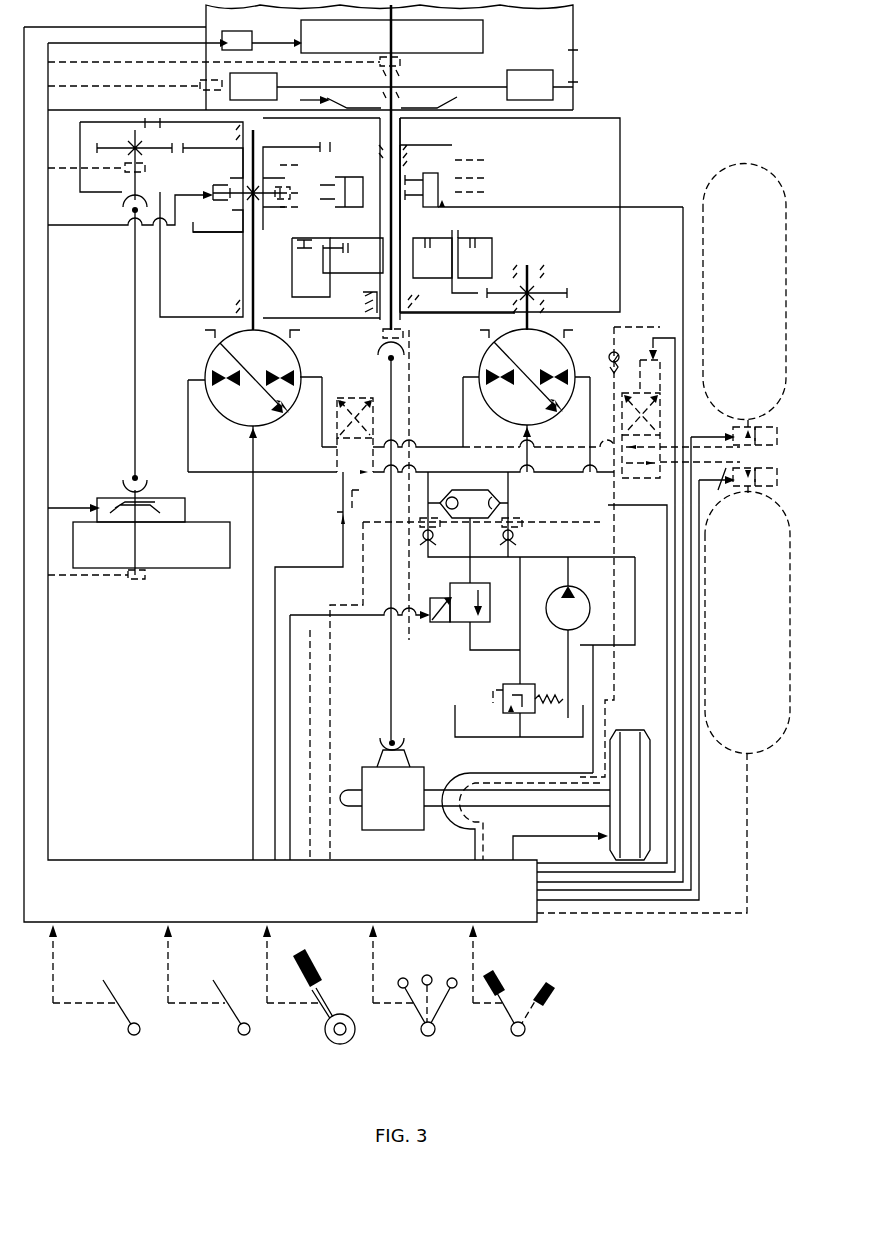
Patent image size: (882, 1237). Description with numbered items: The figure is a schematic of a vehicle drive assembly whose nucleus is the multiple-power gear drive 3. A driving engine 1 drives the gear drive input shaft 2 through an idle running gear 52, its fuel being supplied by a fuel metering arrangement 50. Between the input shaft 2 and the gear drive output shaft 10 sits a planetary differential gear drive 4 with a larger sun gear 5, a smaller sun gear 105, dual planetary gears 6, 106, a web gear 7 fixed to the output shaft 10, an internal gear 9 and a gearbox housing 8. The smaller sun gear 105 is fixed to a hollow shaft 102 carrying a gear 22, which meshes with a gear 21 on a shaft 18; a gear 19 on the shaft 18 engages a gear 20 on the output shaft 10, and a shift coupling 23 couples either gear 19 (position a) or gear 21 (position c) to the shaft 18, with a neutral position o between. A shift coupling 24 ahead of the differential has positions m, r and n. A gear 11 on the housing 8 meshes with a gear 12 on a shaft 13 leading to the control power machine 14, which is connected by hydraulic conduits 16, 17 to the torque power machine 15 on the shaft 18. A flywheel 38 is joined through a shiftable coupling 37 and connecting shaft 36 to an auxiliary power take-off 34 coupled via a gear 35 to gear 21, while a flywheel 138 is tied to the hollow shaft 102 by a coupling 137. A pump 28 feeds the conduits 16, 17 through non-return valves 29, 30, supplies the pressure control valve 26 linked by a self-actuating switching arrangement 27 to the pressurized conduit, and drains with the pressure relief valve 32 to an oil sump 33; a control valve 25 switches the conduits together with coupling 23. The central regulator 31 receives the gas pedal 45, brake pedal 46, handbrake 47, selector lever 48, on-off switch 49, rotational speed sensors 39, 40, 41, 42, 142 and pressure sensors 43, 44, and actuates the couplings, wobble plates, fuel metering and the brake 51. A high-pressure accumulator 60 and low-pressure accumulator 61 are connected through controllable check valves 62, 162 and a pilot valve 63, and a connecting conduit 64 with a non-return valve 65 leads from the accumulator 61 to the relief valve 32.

The driving engine 1 is at (573, 22).
The gear drive input shaft 2 is at (388, 137).
The multiple-power gear drive 3 is at (620, 133).
The planetary differential gear drive 4 is at (423, 272).
The larger sun gear 5 is at (420, 250).
The dual planetary gear 6 is at (466, 252).
The web gear 7 is at (330, 268).
The gearbox housing 8 is at (292, 280).
The internal gear 9 is at (297, 244).
The gear drive output shaft 10 is at (400, 331).
The gear 11 is at (475, 293).
The gear 12 is at (567, 293).
The shaft 13 is at (527, 266).
The control power machine 14 is at (570, 336).
The torque power machine 15 is at (210, 342).
The hydraulic conduit 16 is at (443, 475).
The hydraulic conduit 17 is at (452, 452).
The shaft 18 is at (253, 282).
The gear 19 is at (230, 232).
The gear 20 is at (345, 207).
The gear 21 is at (228, 148).
The gear 22 is at (330, 147).
The shift coupling 23 is at (227, 203).
The shift coupling 24 is at (430, 207).
The control valve 25 is at (336, 484).
The pressure control valve 26 is at (455, 628).
The self-actuating switching arrangement 27 is at (492, 490).
The pump 28 is at (580, 600).
The non-return valve 29 is at (514, 537).
The non-return valve 30 is at (434, 537).
The central regulator 31 is at (247, 918).
The pressure relief valve 32 is at (525, 684).
The oil sump 33 is at (470, 737).
The auxiliary power take-off 34 is at (117, 193).
The gear 35 is at (155, 148).
The connecting shaft 36 is at (133, 345).
The shiftable coupling 37 is at (150, 510).
The flywheel 38 is at (196, 568).
The rotational speed sensor 39 is at (400, 62).
The rotational speed sensor 40 is at (383, 333).
The rotational speed sensor 41 is at (125, 170).
The rotational speed sensor 42 is at (128, 580).
The pressure sensor 43 is at (422, 545).
The pressure sensor 44 is at (522, 522).
The gas pedal 45 is at (120, 1025).
The brake pedal 46 is at (238, 1024).
The handbrake 47 is at (328, 1008).
The selector lever 48 is at (420, 1010).
The on-off switch 49 is at (508, 1010).
The fuel metering arrangement 50 is at (252, 47).
The brake 51 is at (540, 836).
The idle running gear 52 is at (483, 33).
The high-pressure accumulator 60 is at (718, 620).
The low-pressure accumulator 61 is at (720, 330).
The controllable check valve 62 is at (777, 486).
The pilot valve 63 is at (626, 478).
The connecting conduit 64 is at (683, 325).
The non-return valve 65 is at (618, 357).
The hollow shaft 102 is at (405, 147).
The smaller sun gear 105 is at (383, 245).
The dual planetary gear 106 is at (472, 238).
The coupling 137 is at (458, 102).
The flywheel 138 is at (573, 85).
The rotational speed sensor 142 is at (200, 86).
The controllable check valve 162 is at (777, 430).
The shift position c is at (300, 170).
The neutral position o is at (315, 190).
The shift position a is at (300, 207).
The shift position n is at (495, 154).
The shift position r is at (494, 174).
The shift position m is at (499, 196).